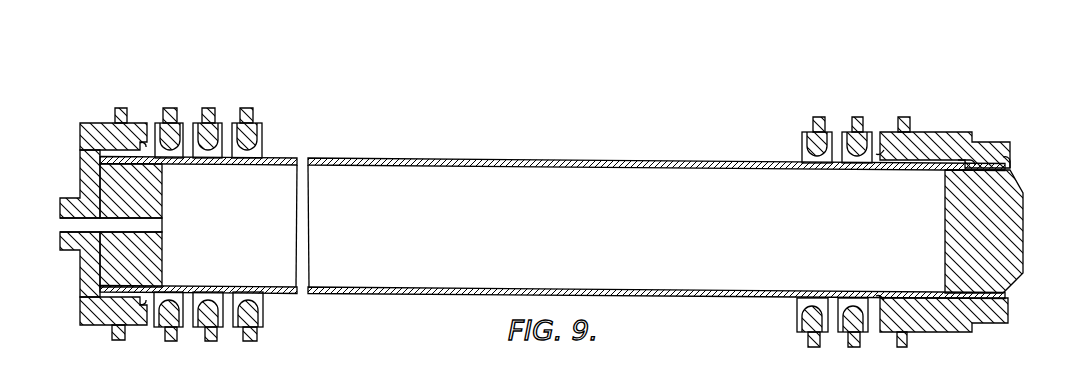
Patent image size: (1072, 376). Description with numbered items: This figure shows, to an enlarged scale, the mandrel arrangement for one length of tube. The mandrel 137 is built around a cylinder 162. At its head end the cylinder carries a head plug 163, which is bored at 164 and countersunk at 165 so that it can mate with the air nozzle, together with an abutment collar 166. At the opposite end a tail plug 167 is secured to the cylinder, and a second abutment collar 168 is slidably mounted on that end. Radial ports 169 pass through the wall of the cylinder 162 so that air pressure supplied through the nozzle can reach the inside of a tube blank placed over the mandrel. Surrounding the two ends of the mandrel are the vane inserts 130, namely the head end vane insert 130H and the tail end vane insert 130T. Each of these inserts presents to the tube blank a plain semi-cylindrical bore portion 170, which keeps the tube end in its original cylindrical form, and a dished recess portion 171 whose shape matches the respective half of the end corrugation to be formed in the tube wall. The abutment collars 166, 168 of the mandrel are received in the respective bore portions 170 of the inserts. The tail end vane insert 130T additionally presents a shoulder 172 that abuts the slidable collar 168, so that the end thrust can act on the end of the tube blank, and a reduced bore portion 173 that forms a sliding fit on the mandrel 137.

The vane inserts 130 is at (248, 112).
The head end vane insert 130H is at (98, 123).
The tail end vane insert 130T is at (932, 140).
The mandrel 137 is at (343, 158).
The cylinder 162 is at (513, 162).
The head plug 163 is at (142, 267).
The bore 164 is at (147, 223).
The countersink 165 is at (67, 232).
The abutment collar 166 is at (90, 177).
The tail plug 167 is at (975, 217).
The abutment collar 168 is at (948, 165).
The radial ports 169 is at (563, 163).
The plain semi-cylindrical bore portion 170 is at (122, 150).
The dished recess portion 171 is at (147, 140).
The shoulder 172 is at (977, 160).
The reduced bore portion 173 is at (1008, 153).